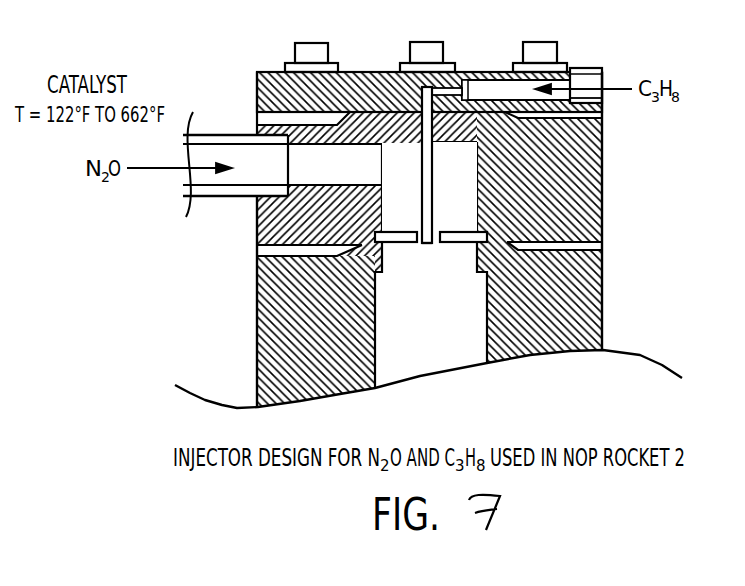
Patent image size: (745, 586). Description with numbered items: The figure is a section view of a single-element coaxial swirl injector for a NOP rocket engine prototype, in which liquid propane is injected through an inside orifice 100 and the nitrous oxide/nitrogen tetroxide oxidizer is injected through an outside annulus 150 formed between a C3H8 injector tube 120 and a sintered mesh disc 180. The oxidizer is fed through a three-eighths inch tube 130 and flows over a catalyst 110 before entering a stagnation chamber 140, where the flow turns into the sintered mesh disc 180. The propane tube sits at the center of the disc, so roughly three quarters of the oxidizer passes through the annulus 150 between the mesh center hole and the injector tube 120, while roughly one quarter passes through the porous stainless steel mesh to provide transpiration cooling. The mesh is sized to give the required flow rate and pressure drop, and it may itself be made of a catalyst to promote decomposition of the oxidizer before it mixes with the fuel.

The inside orifice 100 is at (433, 245).
The catalyst 110 is at (230, 136).
The C3H8 injector tube 120 is at (442, 153).
The tube 130 is at (247, 177).
The stagnation chamber 140 is at (413, 173).
The outside annulus 150 is at (422, 245).
The sintered mesh disc 180 is at (392, 229).